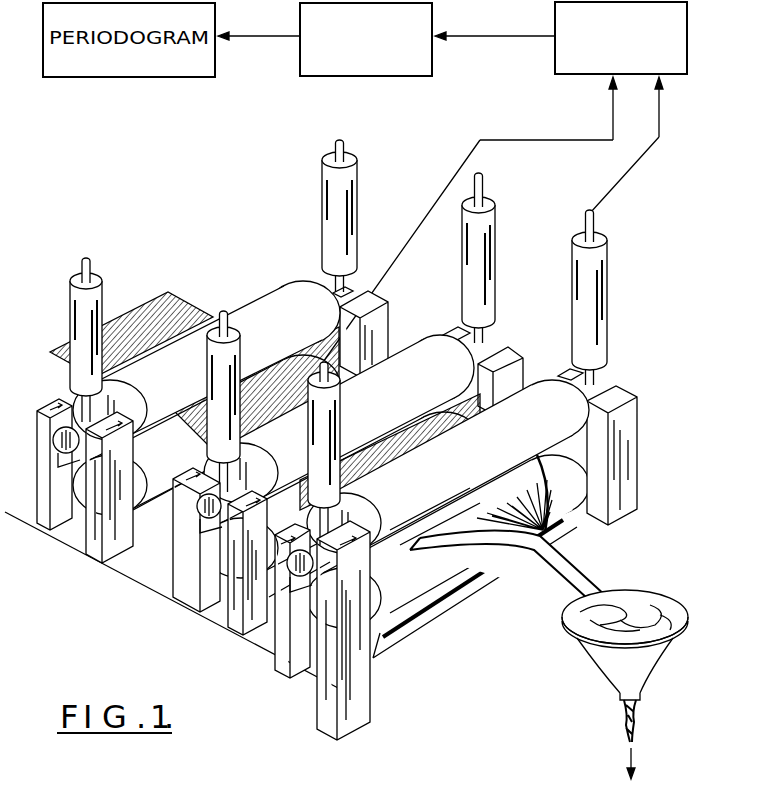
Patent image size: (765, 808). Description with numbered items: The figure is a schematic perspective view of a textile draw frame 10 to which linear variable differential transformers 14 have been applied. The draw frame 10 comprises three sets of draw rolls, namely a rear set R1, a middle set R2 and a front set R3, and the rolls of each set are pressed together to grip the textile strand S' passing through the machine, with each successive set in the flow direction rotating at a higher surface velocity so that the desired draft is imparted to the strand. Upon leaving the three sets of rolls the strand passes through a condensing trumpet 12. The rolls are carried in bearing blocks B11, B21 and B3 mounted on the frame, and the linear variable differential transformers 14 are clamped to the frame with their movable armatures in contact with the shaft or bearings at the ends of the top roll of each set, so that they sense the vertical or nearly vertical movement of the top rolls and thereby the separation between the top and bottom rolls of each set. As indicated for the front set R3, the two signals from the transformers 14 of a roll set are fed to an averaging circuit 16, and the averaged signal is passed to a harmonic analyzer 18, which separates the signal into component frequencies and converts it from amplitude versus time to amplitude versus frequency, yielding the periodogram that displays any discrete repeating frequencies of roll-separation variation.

The draw frame 10 is at (128, 596).
The condensing trumpet 12 is at (605, 664).
The linear variable differential transformers 14 is at (78, 305).
The averaging circuit 16 is at (673, 75).
The harmonic analyzer 18 is at (420, 77).
The bearing block B11 is at (80, 467).
The bearing block B21 is at (219, 537).
The bearing block B3 is at (312, 590).
The rear set of draw rolls R1 is at (206, 360).
The middle set of draw rolls R2 is at (339, 419).
The front set of draw rolls R3 is at (448, 466).
The fibre sheet / web S' is at (265, 399).